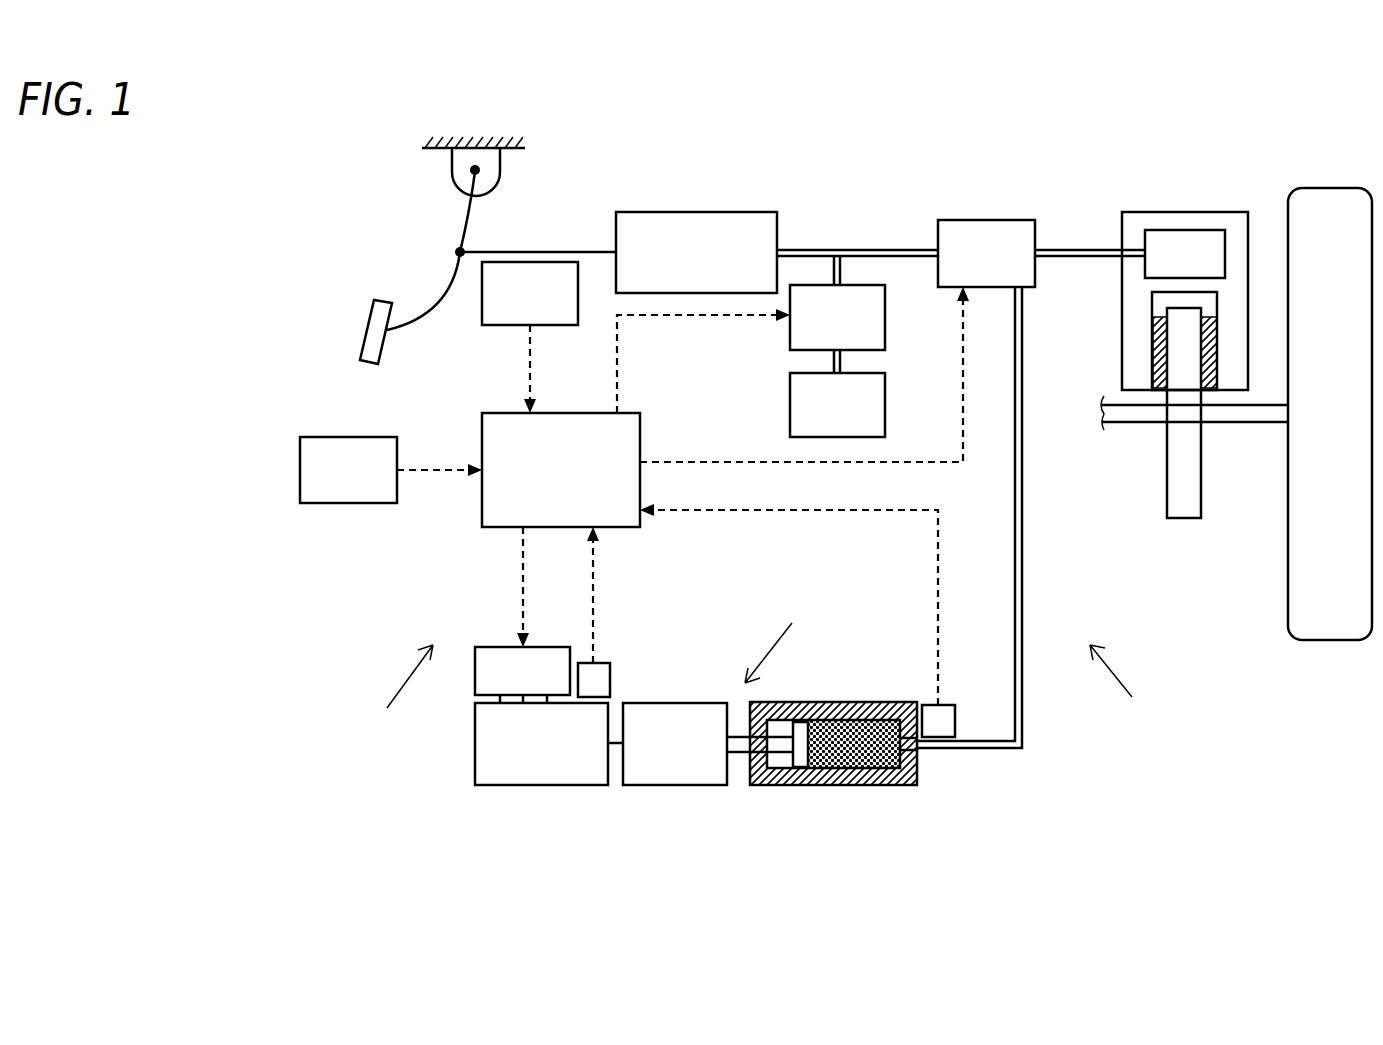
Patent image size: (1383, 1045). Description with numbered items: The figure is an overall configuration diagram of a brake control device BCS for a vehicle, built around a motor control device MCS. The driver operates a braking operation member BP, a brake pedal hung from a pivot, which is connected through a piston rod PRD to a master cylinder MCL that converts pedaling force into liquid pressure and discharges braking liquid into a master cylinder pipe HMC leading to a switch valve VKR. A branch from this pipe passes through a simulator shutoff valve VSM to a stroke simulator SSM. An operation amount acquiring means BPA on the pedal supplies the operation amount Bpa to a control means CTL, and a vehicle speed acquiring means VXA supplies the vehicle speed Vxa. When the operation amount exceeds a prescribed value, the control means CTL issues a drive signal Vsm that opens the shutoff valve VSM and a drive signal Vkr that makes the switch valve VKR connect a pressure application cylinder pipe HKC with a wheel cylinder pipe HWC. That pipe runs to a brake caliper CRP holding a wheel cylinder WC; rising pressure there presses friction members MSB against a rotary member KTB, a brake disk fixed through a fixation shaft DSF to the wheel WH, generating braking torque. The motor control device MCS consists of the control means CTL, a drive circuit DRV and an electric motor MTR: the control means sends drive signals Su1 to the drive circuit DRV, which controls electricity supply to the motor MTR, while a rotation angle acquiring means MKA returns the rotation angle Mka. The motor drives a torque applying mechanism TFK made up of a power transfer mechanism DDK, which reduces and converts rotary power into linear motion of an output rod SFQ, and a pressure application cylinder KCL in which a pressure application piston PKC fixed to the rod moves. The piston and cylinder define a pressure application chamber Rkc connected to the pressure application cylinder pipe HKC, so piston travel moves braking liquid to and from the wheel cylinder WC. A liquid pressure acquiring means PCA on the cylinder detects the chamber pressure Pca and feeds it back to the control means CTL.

The braking operation member BP is at (372, 328).
The piston rod PRD is at (555, 250).
The operation amount acquiring means BPA is at (530, 293).
The operation amount Bpa is at (495, 369).
The master cylinder MCL is at (696, 252).
The master cylinder pipe HMC is at (877, 248).
The simulator shutoff valve VSM is at (837, 317).
The stroke simulator SSM is at (837, 393).
The drive signal Vsm is at (703, 361).
The switch valve VKR is at (986, 253).
The drive signal Vkr is at (804, 374).
The wheel cylinder pipe HWC is at (1073, 250).
The brake caliper CRP is at (1153, 212).
The wheel cylinder WC is at (1185, 254).
The friction members MSB is at (1153, 355).
The rotary member KTB is at (1183, 518).
The fixation shaft DSF is at (1250, 425).
The wheel WH is at (1330, 414).
The pressure application cylinder pipe HKC is at (1022, 508).
The vehicle speed acquiring means VXA is at (348, 470).
The vehicle speed Vxa is at (439, 447).
The control means CTL is at (561, 470).
The drive signal Su1 is at (393, 587).
The rotation angle Mka is at (627, 595).
The rotation angle acquiring means MKA is at (605, 663).
The drive circuit DRV is at (522, 675).
The electric motor MTR is at (541, 744).
The power transfer mechanism DDK is at (667, 744).
The motor control device MCS is at (391, 700).
The pressure application cylinder KCL is at (905, 783).
The pressure application chamber Rkc is at (867, 768).
The pressure application piston PKC is at (805, 770).
The output rod SFQ is at (738, 752).
The torque applying mechanism TFK is at (788, 629).
The liquid pressure acquiring means PCA is at (932, 705).
The liquid pressure Pca is at (822, 604).
The brake control device BCS is at (1137, 701).